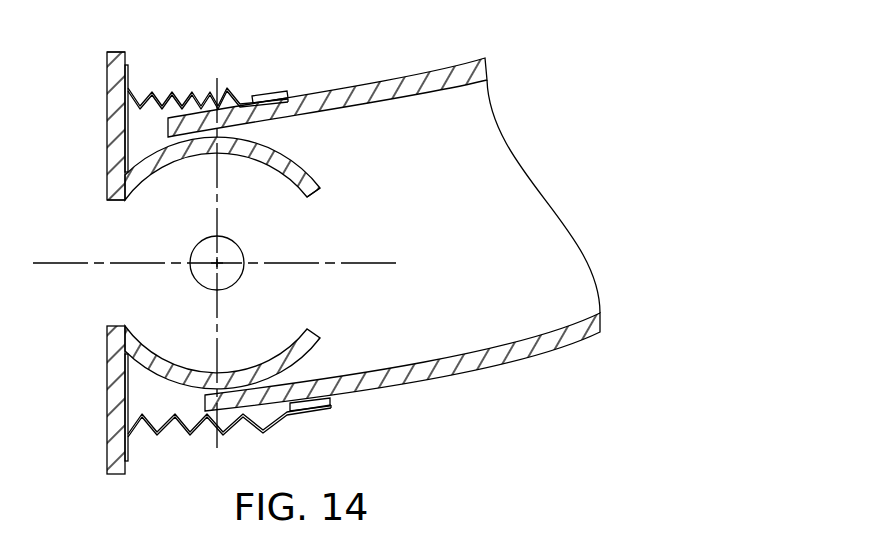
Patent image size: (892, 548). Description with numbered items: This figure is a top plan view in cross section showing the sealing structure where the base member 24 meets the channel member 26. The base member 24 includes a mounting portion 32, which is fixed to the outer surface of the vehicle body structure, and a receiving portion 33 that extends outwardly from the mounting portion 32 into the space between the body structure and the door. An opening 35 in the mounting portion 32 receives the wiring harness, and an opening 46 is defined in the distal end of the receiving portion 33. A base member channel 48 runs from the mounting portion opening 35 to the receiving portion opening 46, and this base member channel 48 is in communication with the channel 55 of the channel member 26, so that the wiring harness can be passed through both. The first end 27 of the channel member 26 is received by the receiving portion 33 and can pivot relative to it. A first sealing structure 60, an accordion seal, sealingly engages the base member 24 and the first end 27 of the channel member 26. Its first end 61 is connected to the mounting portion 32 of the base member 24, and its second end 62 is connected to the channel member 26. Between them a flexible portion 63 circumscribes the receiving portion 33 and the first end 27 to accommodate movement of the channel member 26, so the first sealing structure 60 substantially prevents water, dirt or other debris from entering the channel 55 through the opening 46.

The base member 24 is at (105, 103).
The channel member 26 is at (393, 81).
The first end of the channel member 27 is at (180, 370).
The mounting portion 32 is at (118, 52).
The receiving portion 33 is at (316, 171).
The opening in the base member 35 is at (118, 202).
The opening in distal end of receiving portion 46 is at (314, 199).
The base member channel 48 is at (162, 312).
The channel of the channel member 55 is at (475, 180).
The first sealing structure 60 is at (188, 86).
The first end of the first sealing structure 61 is at (129, 78).
The second end of the first sealing structure 62 is at (280, 94).
The flexible portion 63 is at (180, 433).